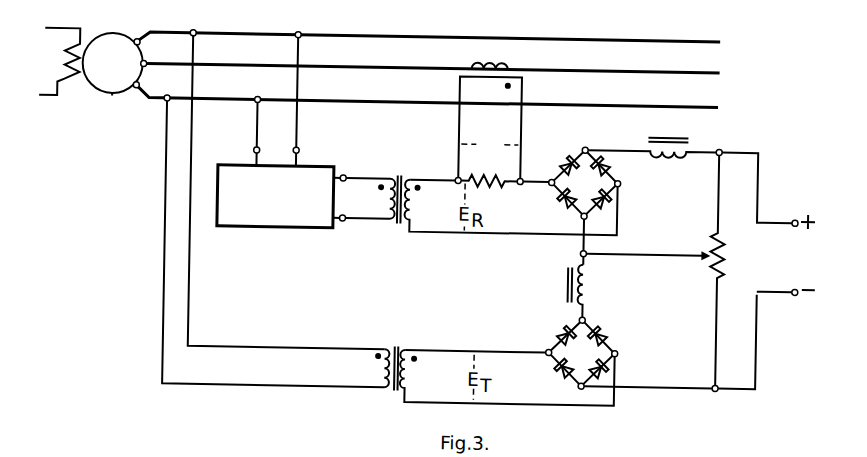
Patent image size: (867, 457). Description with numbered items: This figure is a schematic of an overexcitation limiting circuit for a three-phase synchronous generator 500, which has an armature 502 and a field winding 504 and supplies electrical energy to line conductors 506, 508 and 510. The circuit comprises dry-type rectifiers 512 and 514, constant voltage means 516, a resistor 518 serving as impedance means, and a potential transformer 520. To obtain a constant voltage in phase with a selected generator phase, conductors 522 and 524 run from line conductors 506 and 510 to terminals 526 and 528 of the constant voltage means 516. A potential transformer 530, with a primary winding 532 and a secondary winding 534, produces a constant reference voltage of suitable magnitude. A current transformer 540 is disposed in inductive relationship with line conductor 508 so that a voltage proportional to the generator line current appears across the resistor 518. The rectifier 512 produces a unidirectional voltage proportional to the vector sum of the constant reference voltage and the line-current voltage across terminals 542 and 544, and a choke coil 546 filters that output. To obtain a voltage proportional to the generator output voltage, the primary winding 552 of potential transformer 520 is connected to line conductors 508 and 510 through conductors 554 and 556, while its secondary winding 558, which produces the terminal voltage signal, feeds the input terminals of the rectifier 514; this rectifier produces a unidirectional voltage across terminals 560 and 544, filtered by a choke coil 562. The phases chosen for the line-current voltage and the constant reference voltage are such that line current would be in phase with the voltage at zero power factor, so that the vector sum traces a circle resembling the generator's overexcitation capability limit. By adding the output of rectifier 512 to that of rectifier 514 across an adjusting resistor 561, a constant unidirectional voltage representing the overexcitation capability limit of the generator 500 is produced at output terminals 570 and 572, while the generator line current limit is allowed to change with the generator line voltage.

The synchronous generator 500 is at (127, 30).
The armature 502 is at (110, 100).
The field winding 504 is at (56, 74).
The line conductor 506 is at (672, 36).
The line conductor 508 is at (677, 68).
The line conductor 510 is at (678, 102).
The dry-type rectifier 512 is at (598, 190).
The dry-type rectifier 514 is at (601, 360).
The constant voltage means 516 is at (292, 231).
The resistor 518 is at (490, 186).
The potential transformer 520 is at (398, 347).
The conductor 522 is at (255, 122).
The conductor 524 is at (295, 122).
The terminal 526 is at (252, 153).
The terminal 528 is at (298, 152).
The potential transformer 530 is at (398, 223).
The primary winding 532 is at (386, 203).
The secondary winding 534 is at (404, 202).
The current transformer 540 is at (497, 63).
The terminal 542 is at (720, 146).
The terminal 544 is at (581, 251).
The choke coil 546 is at (657, 130).
The primary winding 552 is at (384, 372).
The conductor 554 is at (290, 388).
The conductor 556 is at (290, 350).
The secondary winding 558 is at (411, 372).
The terminal 560 is at (720, 387).
The adjusting resistor 561 is at (725, 252).
The choke coil 562 is at (589, 283).
The output terminal 570 is at (794, 214).
The output terminal 572 is at (794, 289).